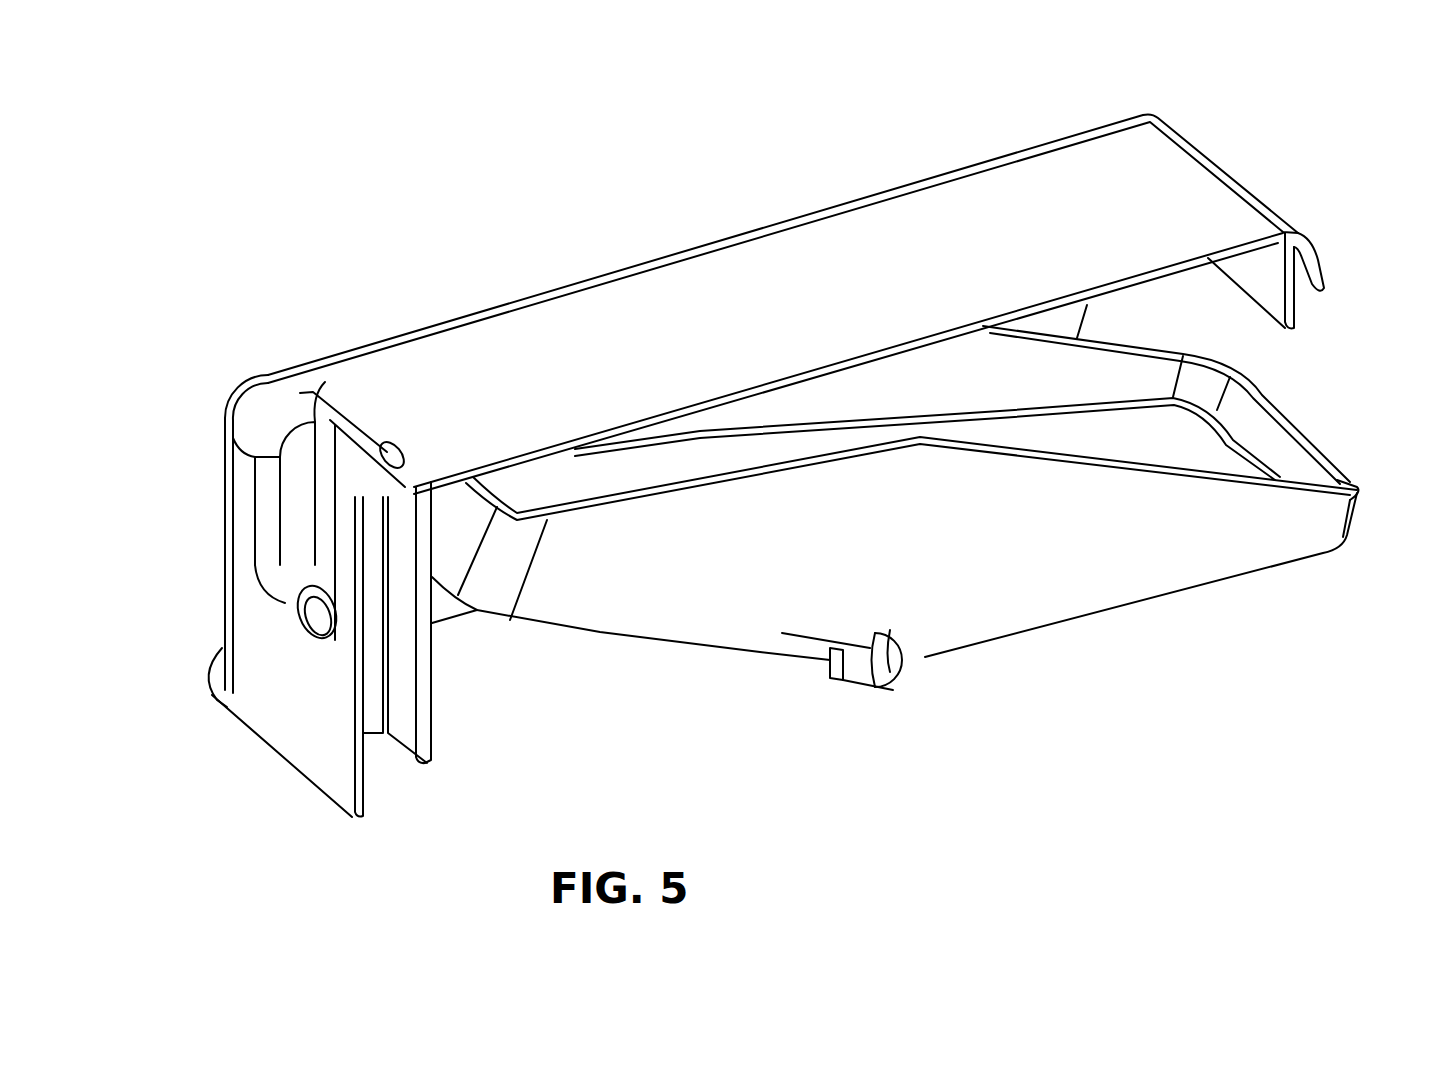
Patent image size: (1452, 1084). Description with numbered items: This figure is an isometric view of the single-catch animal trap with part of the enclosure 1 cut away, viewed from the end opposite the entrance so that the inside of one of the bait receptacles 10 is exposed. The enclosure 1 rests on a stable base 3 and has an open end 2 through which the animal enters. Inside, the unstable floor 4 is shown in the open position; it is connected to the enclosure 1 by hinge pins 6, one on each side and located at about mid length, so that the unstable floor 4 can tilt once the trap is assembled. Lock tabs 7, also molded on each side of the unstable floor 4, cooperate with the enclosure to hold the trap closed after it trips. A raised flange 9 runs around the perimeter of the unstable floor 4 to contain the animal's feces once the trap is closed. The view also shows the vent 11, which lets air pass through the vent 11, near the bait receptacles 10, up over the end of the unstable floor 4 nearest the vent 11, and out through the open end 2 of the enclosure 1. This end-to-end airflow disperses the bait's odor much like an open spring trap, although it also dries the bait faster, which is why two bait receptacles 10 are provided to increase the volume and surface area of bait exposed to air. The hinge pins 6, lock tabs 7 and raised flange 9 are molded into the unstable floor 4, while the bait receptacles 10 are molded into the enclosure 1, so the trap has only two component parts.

The enclosure 1 is at (1013, 190).
The open end 2 is at (1087, 305).
The stable base 3 is at (210, 662).
The unstable floor 4 is at (1230, 450).
The hinge pins 6 is at (910, 673).
The lock tabs 7 is at (840, 680).
The raised flange 9 is at (1358, 493).
The bait receptacle 10 is at (262, 398).
The vent 11 is at (318, 603).